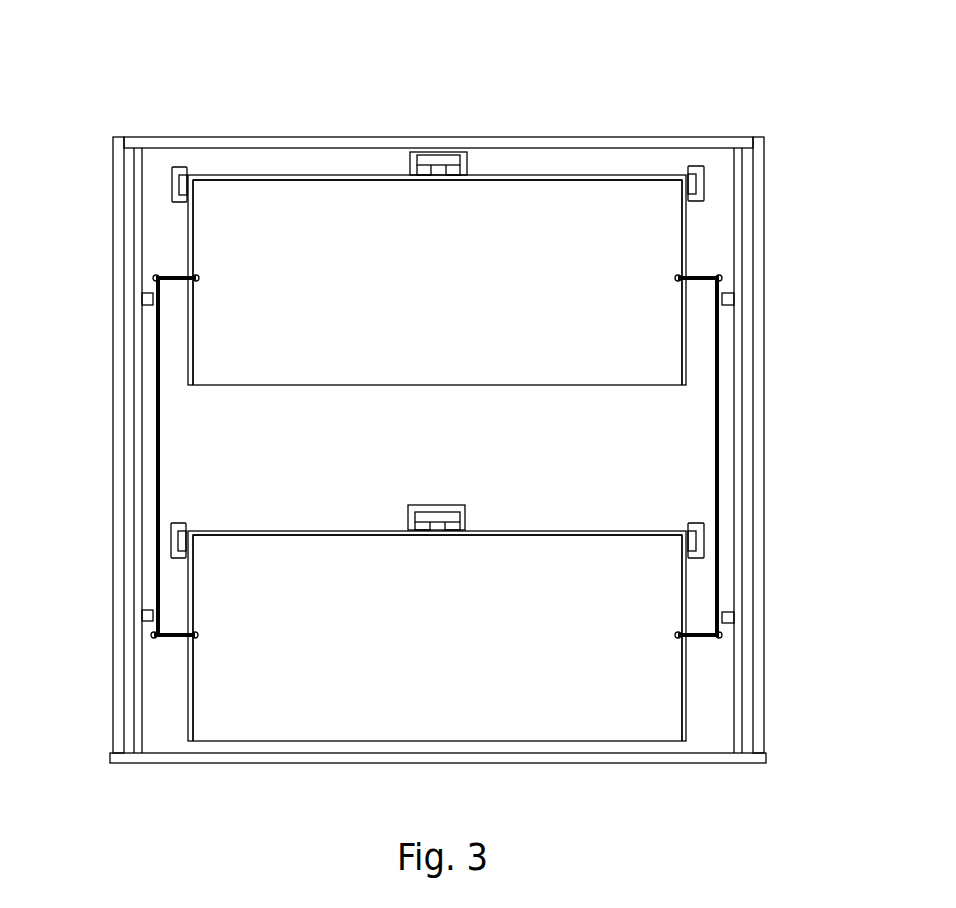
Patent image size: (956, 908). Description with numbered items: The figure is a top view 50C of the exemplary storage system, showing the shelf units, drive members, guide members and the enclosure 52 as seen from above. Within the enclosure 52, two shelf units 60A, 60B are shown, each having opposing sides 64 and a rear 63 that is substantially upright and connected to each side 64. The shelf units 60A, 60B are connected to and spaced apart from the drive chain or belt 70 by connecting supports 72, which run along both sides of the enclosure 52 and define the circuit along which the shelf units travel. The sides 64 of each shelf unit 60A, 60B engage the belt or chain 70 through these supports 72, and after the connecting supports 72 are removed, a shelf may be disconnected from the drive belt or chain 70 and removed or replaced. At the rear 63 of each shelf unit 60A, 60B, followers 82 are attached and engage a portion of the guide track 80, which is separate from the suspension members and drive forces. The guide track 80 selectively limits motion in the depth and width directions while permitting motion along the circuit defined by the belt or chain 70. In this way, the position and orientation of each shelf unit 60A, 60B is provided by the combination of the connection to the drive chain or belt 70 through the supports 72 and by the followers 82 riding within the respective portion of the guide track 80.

The top view 50C is at (114, 118).
The enclosure 52 is at (770, 126).
The shelf unit 60A is at (336, 697).
The shelf unit 60B is at (336, 295).
The rear 63 is at (327, 180).
The sides 64 is at (194, 242).
The drive chain or belt 70 is at (161, 445).
The connecting supports 72 is at (168, 272).
The guide track 80 is at (467, 161).
The followers 82 is at (437, 167).